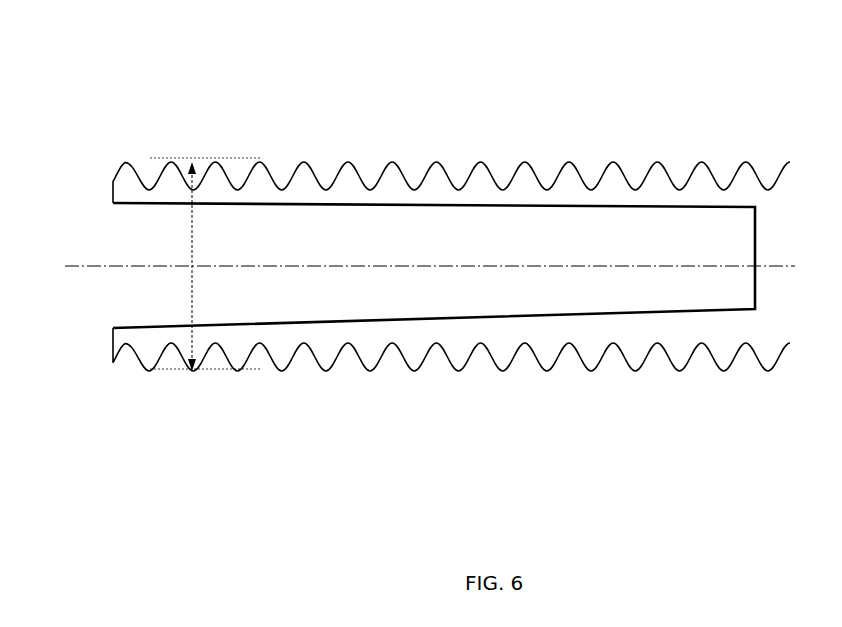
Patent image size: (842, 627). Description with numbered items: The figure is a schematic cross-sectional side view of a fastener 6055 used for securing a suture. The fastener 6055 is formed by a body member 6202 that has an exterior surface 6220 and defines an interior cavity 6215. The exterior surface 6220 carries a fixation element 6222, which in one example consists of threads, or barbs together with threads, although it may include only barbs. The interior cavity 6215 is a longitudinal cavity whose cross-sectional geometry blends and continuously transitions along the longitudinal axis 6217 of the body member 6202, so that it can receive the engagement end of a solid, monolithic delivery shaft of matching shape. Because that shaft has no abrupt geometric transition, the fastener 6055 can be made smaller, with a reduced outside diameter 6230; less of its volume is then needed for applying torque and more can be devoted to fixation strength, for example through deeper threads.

The fastener 6055 is at (355, 56).
The interior cavity 6215 is at (122, 243).
The outside diameter 6230 is at (205, 264).
The longitudinal axis 6217 is at (286, 266).
The body member 6202 is at (683, 335).
The fixation element 6222 is at (484, 180).
The exterior surface 6220 is at (540, 372).